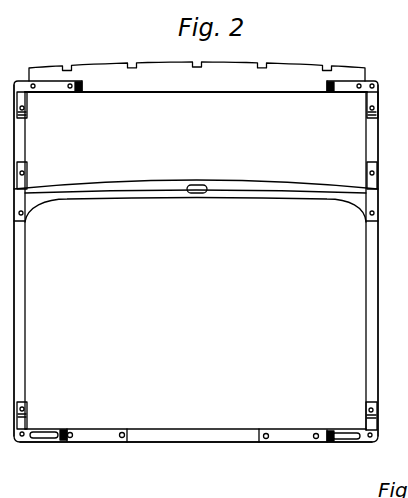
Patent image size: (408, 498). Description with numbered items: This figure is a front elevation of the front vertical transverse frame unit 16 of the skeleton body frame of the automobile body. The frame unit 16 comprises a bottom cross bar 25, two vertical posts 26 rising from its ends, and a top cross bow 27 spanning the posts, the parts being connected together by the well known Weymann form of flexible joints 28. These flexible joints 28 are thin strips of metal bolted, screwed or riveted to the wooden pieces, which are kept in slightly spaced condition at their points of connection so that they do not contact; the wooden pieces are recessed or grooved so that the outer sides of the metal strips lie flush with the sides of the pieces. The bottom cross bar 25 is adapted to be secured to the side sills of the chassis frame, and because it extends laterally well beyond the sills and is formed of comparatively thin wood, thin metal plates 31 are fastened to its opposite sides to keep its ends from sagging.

The front vertical transverse frame unit 16 is at (358, 69).
The bottom cross bar 25 is at (188, 429).
The vertical posts 26 is at (25, 313).
The top cross bow 27 is at (276, 77).
The flexible joints 28 is at (43, 428).
The thin metal plates 31 is at (97, 438).